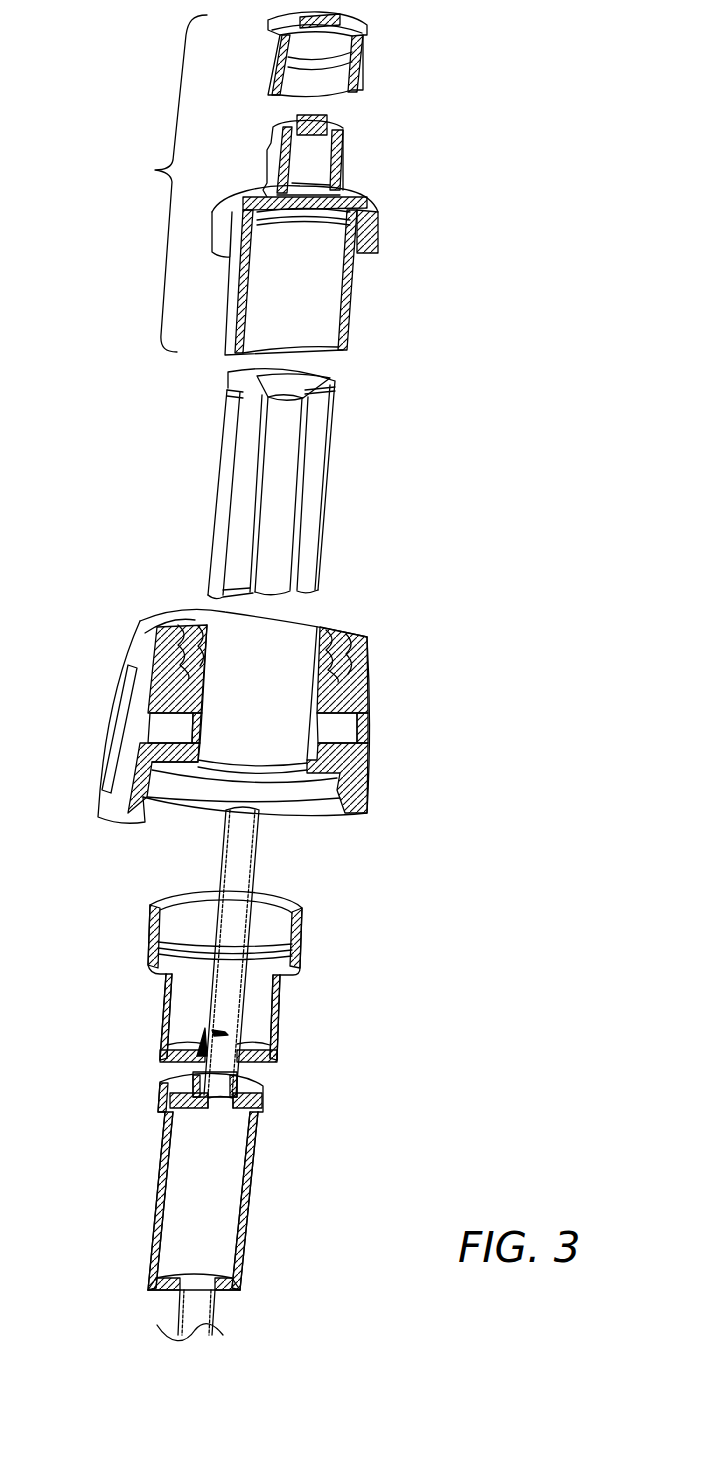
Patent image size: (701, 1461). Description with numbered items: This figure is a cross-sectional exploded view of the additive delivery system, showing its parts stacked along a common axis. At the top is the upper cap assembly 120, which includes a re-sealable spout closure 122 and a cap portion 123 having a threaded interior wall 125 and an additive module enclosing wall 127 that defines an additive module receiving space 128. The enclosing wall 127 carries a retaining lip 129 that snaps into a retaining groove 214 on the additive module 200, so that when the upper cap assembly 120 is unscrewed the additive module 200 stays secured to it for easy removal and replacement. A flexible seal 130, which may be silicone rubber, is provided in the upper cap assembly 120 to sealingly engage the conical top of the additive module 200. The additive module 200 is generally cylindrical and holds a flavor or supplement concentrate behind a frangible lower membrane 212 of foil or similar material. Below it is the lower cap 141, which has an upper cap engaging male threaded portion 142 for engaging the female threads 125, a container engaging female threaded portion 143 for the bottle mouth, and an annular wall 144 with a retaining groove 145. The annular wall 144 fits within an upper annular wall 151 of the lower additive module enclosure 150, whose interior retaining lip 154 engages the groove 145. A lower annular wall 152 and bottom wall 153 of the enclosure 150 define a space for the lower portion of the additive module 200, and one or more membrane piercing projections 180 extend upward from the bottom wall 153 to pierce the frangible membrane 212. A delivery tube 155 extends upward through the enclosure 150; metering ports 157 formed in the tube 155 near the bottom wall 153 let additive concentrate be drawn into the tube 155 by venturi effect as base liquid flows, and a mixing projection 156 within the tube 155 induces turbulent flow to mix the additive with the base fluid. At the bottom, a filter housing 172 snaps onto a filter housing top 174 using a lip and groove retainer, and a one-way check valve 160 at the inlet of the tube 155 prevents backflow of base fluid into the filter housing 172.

The upper cap assembly 120 is at (291, 202).
The re-sealable spout closure 122 is at (357, 55).
The flexible seal 130 is at (340, 187).
The cap portion 123 is at (339, 289).
The threaded interior wall 125 is at (360, 255).
The retaining lip 129 is at (310, 225).
The additive module enclosing wall 127 is at (347, 330).
The additive module receiving space 128 is at (305, 322).
The retaining groove 214 is at (327, 388).
The additive module 200 is at (315, 484).
The frangible lower membrane 212 is at (303, 597).
The upper cap engaging male threaded portion 142 is at (323, 627).
The lower cap 141 is at (286, 716).
The annular wall 144 is at (323, 732).
The retaining groove 145 is at (323, 752).
The container engaging female threaded portion 143 is at (350, 807).
The delivery tube 155 is at (260, 833).
The upper annular wall 151 is at (305, 927).
The retaining lip 154 is at (297, 955).
The lower additive module enclosure 150 is at (242, 1003).
The mixing projection 156 is at (208, 1031).
The additive module membrane piercing projection 180 is at (196, 1042).
The lower annular wall 152 is at (282, 1012).
The metering port 157 is at (265, 1055).
The bottom wall 153 is at (262, 1065).
The filter housing top 174 is at (158, 1113).
The check valve 160 is at (213, 1108).
The filter housing 172 is at (206, 1206).